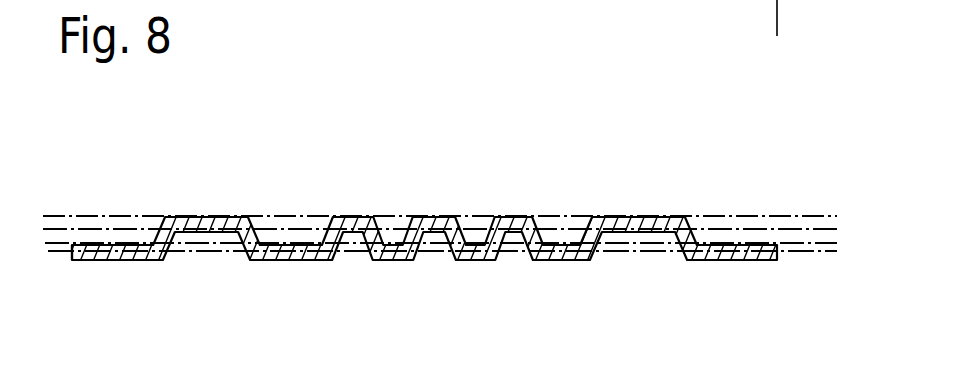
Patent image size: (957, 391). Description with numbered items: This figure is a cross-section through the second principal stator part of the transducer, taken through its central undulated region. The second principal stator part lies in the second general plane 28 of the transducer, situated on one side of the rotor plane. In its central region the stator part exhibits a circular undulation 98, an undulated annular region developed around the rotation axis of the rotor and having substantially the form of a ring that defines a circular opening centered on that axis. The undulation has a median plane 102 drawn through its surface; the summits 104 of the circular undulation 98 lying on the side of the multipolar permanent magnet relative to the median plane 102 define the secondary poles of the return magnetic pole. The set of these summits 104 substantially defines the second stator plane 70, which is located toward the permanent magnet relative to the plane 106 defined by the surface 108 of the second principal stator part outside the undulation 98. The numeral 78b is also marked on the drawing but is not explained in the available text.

The circular undulation 98 is at (487, 172).
The summits 104 is at (212, 216).
The surface 108 is at (120, 234).
The plane 106 is at (70, 254).
The second stator plane 70 is at (720, 216).
The median plane 102 is at (778, 216).
The second general plane 28 is at (813, 252).
The connecting member 78b is at (784, 37).